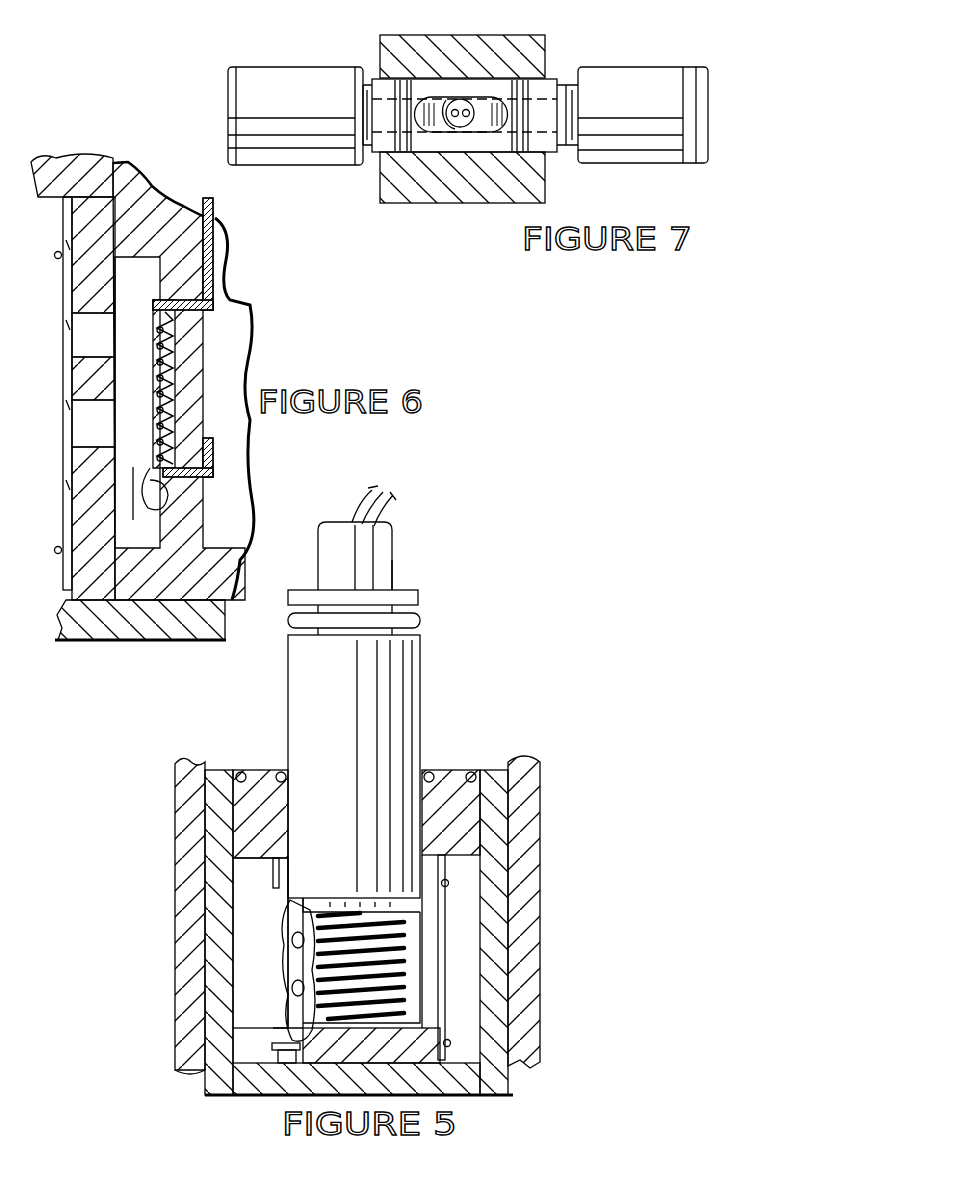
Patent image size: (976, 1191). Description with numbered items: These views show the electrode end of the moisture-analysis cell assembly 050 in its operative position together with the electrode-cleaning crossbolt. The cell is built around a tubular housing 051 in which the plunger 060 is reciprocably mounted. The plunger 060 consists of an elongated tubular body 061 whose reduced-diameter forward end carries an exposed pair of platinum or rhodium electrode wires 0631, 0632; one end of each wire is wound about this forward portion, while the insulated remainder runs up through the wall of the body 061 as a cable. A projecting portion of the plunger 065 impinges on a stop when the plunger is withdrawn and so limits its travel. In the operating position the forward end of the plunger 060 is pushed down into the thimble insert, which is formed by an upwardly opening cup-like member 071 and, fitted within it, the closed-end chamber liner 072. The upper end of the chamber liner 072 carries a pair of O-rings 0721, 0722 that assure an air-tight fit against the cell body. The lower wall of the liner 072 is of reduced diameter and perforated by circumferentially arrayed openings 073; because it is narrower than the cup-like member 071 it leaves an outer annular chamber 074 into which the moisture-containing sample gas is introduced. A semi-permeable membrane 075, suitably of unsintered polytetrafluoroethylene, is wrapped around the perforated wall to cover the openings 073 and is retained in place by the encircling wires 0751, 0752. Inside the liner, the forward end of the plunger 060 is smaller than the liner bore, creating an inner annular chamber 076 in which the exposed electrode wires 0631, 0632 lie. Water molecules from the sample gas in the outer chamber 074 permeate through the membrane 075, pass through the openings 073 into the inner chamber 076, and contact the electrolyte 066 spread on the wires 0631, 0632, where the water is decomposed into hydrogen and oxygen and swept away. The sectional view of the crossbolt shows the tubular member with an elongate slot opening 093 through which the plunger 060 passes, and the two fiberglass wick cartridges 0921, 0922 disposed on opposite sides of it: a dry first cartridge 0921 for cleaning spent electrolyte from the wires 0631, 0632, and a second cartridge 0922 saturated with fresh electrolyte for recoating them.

In FIG. 7, the cell assembly 050 is at (551, 35).
In FIG. 7, the tubular housing 051 is at (546, 190).
In FIG. 7, the elongated tubular body 061 is at (466, 100).
In FIG. 7, the first electrode wire 0631 is at (467, 118).
In FIG. 5, the first electrode wire 0631 is at (343, 908).
In FIG. 7, the second electrode wire 0632 is at (454, 118).
In FIG. 5, the second electrode wire 0632 is at (300, 938).
In FIG. 7, the elongate slot opening 093 is at (447, 105).
In FIG. 7, the first fiberglass wick cartridge 0921 is at (380, 165).
In FIG. 7, the second fiberglass wick cartridge 0922 is at (548, 160).
In FIG. 5, the plunger 060 is at (398, 552).
In FIG. 5, the projecting portion of the plunger 065 is at (418, 597).
In FIG. 6, the electrolyte 066 is at (167, 507).
In FIG. 5, the electrolyte 066 is at (413, 947).
In FIG. 6, the cup-like member 071 is at (57, 167).
In FIG. 5, the cup-like member 071 is at (540, 830).
In FIG. 6, the chamber liner 072 is at (132, 206).
In FIG. 5, the chamber liner 072 is at (541, 782).
In FIG. 5, the first O-ring 0721 is at (430, 770).
In FIG. 5, the second O-ring 0722 is at (473, 770).
In FIG. 6, the circumferentially arrayed openings 073 is at (95, 337).
In FIG. 5, the circumferentially arrayed openings 073 is at (300, 998).
In FIG. 5, the outer annular chamber 074 is at (253, 943).
In FIG. 6, the semi-permeable membrane 075 is at (75, 305).
In FIG. 5, the semi-permeable membrane 075 is at (280, 960).
In FIG. 6, the first encircling wire 0751 is at (57, 252).
In FIG. 5, the first encircling wire 0751 is at (445, 880).
In FIG. 6, the second encircling wire 0752 is at (59, 556).
In FIG. 5, the second encircling wire 0752 is at (447, 1043).
In FIG. 6, the inner annular chamber 076 is at (133, 467).
In FIG. 5, the inner annular chamber 076 is at (455, 905).